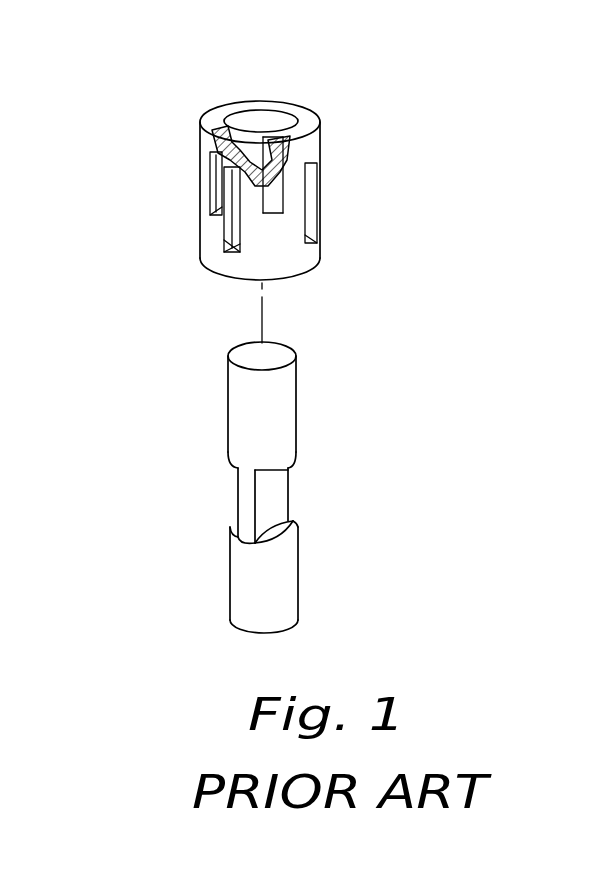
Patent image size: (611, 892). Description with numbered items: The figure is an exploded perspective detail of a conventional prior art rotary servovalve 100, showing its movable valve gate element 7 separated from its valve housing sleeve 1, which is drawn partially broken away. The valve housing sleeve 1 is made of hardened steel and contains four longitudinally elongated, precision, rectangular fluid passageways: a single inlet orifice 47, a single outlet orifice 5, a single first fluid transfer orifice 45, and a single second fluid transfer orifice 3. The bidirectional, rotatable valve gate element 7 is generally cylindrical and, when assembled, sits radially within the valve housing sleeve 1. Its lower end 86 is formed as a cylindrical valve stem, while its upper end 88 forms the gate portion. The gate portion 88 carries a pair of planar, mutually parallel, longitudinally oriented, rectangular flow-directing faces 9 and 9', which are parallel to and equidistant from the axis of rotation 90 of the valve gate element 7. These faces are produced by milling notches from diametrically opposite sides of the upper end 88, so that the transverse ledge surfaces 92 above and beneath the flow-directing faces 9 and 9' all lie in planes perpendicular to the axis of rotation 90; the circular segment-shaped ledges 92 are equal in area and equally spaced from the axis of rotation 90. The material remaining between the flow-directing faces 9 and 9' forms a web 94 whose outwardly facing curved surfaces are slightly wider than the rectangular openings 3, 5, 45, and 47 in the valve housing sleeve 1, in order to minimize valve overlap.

The valve housing sleeve 1 is at (307, 123).
The second fluid transfer orifice 3 is at (318, 205).
The outlet orifice 5 is at (233, 230).
The movable valve gate element 7 is at (313, 365).
The flow-directing face 9 is at (330, 505).
The flow-directing face 9' is at (180, 499).
The first fluid transfer orifice 45 is at (213, 188).
The inlet orifice 47 is at (268, 138).
The lower end 86 is at (255, 568).
The upper end / gate portion 88 is at (288, 402).
The axis of rotation 90 is at (264, 318).
The transverse ledge surfaces 92 is at (228, 463).
The web 94 is at (252, 507).
The rotary servovalve 100 is at (394, 287).